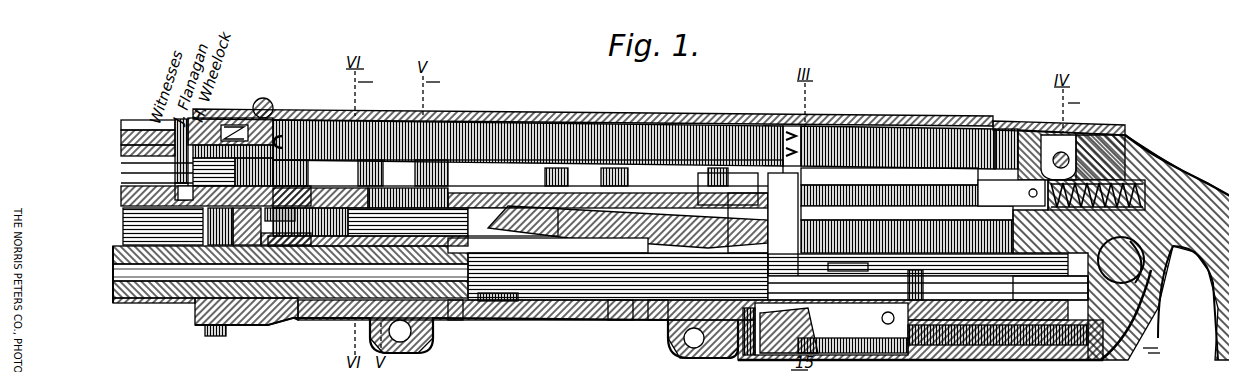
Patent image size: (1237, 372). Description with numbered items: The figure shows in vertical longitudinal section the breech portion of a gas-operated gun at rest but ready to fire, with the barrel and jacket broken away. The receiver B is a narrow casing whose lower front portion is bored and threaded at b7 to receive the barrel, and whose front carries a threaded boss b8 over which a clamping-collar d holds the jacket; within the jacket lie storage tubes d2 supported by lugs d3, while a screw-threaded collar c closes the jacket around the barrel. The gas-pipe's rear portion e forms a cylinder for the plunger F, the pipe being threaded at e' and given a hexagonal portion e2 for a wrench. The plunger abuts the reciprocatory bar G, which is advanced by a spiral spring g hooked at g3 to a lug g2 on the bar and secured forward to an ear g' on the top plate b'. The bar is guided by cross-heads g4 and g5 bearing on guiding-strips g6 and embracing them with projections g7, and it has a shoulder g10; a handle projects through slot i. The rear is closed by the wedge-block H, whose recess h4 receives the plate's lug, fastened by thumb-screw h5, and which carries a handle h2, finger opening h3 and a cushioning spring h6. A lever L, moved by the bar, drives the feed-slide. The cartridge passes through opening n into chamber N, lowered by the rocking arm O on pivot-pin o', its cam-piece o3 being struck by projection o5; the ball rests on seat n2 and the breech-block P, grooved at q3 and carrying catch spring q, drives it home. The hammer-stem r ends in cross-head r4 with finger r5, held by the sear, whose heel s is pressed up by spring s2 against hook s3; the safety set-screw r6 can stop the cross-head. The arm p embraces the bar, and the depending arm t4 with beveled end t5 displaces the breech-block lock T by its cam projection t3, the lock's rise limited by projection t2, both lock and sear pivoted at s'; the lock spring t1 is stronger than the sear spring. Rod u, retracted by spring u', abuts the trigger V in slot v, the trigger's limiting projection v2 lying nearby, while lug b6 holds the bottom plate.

The rear cylindrical portion of gas-pipe e is at (157, 144).
The plunger or piston F is at (150, 124).
The hexagonal portion e2 is at (173, 130).
The firing pin head ec is at (185, 140).
The threaded boss or flange b8 is at (230, 110).
The screw-threaded portion e' is at (287, 228).
The lug or ear g' is at (296, 229).
The spiral spring g is at (528, 124).
The shoulder g10 is at (695, 116).
The lug g2 is at (783, 130).
The hook g3 is at (800, 122).
The recess h4 is at (1120, 126).
The thumb-screw h5 is at (1042, 145).
The opening h3 is at (1058, 145).
The bifurcations or projections g7 is at (425, 150).
The front guide or cross-head g5 is at (515, 178).
The reciprocatory bar or actuator G is at (566, 178).
The receiver A is at (675, 179).
The projection or spline o5 is at (515, 185).
The cam-piece or wiper o3 is at (650, 175).
The lever L is at (507, 222).
The rear guide or cross-head g4 is at (628, 210).
The opening n is at (548, 245).
The rocking arm or depressor O is at (565, 270).
The arm p is at (748, 222).
The arm t4 is at (885, 272).
The guiding-strips g6 is at (870, 165).
The slot i is at (907, 213).
The pin or set-screw r6 is at (888, 238).
The finger r5 is at (918, 251).
The chamber or slideway N is at (970, 292).
The cross-head r4 is at (937, 285).
The hammer-stem r is at (850, 262).
The hook s3 is at (1020, 292).
The handle h2 is at (1018, 186).
The stiff spring h6 is at (1140, 185).
The wedge-block or safety-block H is at (1120, 152).
The receiver or casing B is at (605, 300).
The breech-block lock T is at (920, 331).
The cam projection t3 is at (853, 332).
The lower beveled extremity t5 is at (758, 326).
The pivot s' is at (977, 348).
The slot or chamber v is at (1165, 310).
The spring u' is at (1186, 336).
The trigger V is at (1152, 340).
The screw-threaded bore b7 is at (445, 312).
The concave seat or guide n2 is at (490, 300).
The pivot-pin o' is at (654, 323).
The breech-block P is at (612, 315).
The spring q is at (581, 367).
The exterior lug b6 is at (712, 340).
The projection t2 is at (750, 325).
The trigger arm t1 is at (805, 345).
The heel of sear s is at (922, 360).
The flat spring s2 is at (955, 340).
The slot or groove q3 is at (1040, 340).
The rod or slide-piece u is at (1085, 362).
The stock screw v2 is at (1226, 367).
The clamping-collar d is at (190, 298).
The storage tubes or chambers d2 is at (125, 295).
The internal lugs or flanges d3 is at (238, 262).
The screw-threaded collar c is at (152, 295).